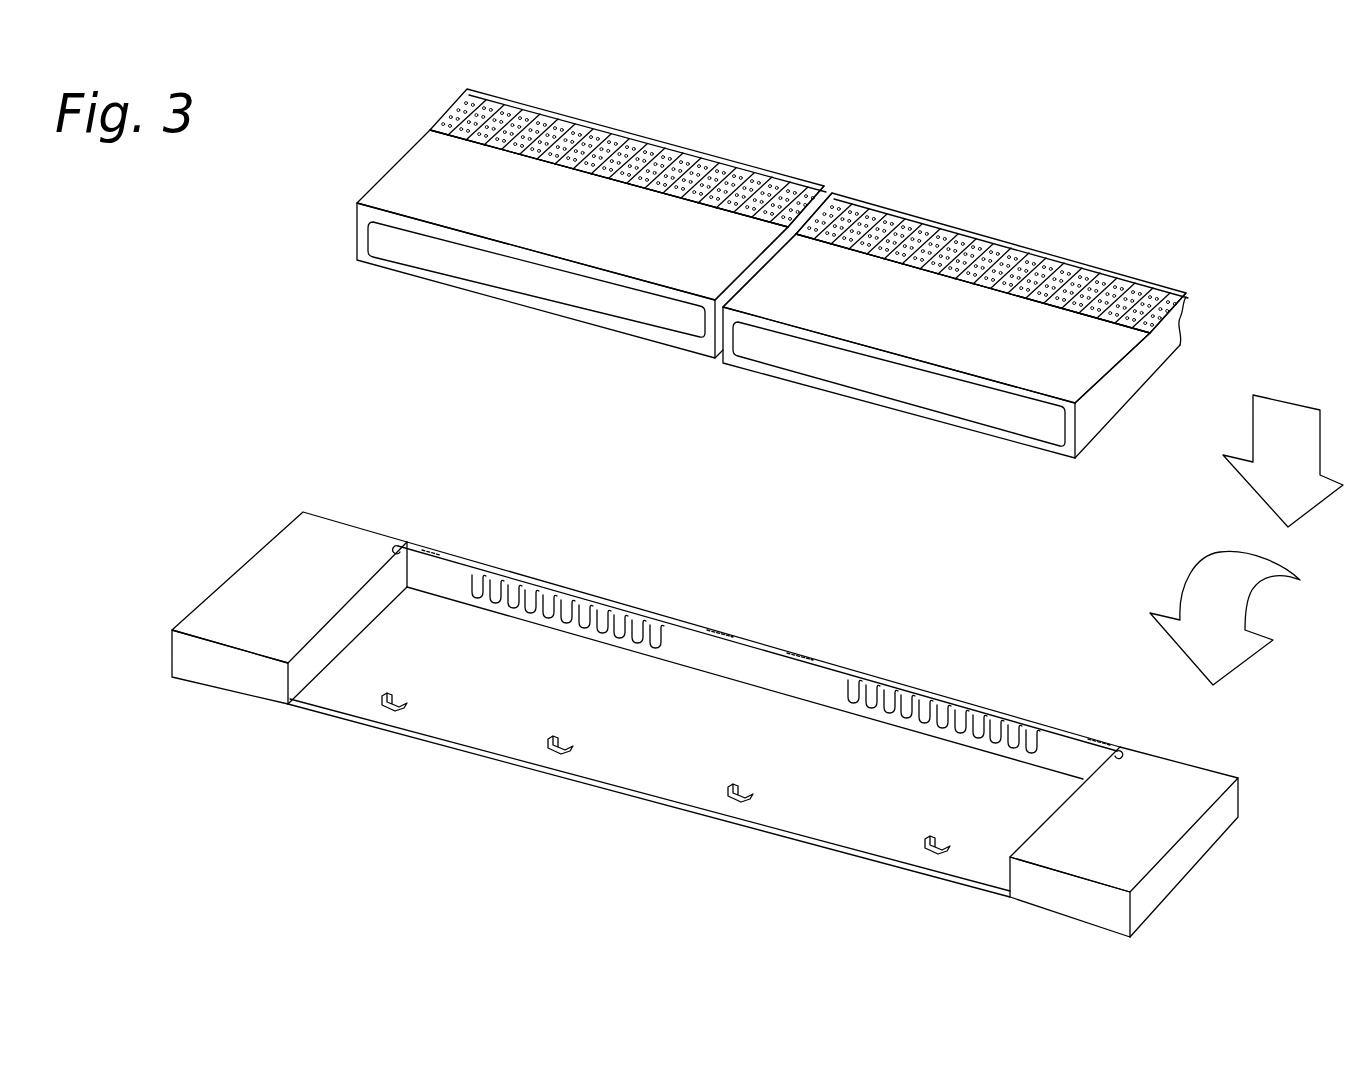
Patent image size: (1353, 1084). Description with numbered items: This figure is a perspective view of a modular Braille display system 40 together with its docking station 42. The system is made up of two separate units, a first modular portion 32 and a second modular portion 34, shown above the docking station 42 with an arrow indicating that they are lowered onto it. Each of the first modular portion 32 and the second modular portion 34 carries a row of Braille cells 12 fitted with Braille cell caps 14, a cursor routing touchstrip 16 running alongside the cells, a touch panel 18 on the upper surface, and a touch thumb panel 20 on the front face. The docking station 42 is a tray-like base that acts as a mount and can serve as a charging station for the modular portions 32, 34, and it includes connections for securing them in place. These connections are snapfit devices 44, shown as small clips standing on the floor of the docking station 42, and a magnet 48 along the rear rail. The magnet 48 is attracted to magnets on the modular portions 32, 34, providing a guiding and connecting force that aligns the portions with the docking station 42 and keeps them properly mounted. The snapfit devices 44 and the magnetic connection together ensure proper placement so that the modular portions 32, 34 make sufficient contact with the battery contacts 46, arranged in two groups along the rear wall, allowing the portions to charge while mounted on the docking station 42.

The Braille cells 12 is at (748, 181).
The Braille cell caps 14 is at (566, 108).
The cursor routing touchstrip 16 is at (437, 145).
The touch panel 18 is at (415, 188).
The touch thumb panel 20 is at (445, 255).
The first modular portion 32 is at (716, 112).
The second modular portion 34 is at (1068, 203).
The modular Braille display system 40 is at (1048, 127).
The docking station 42 is at (1194, 726).
The snapfit devices 44 is at (392, 706).
The battery contacts 46 is at (593, 613).
The magnet 48 is at (765, 648).